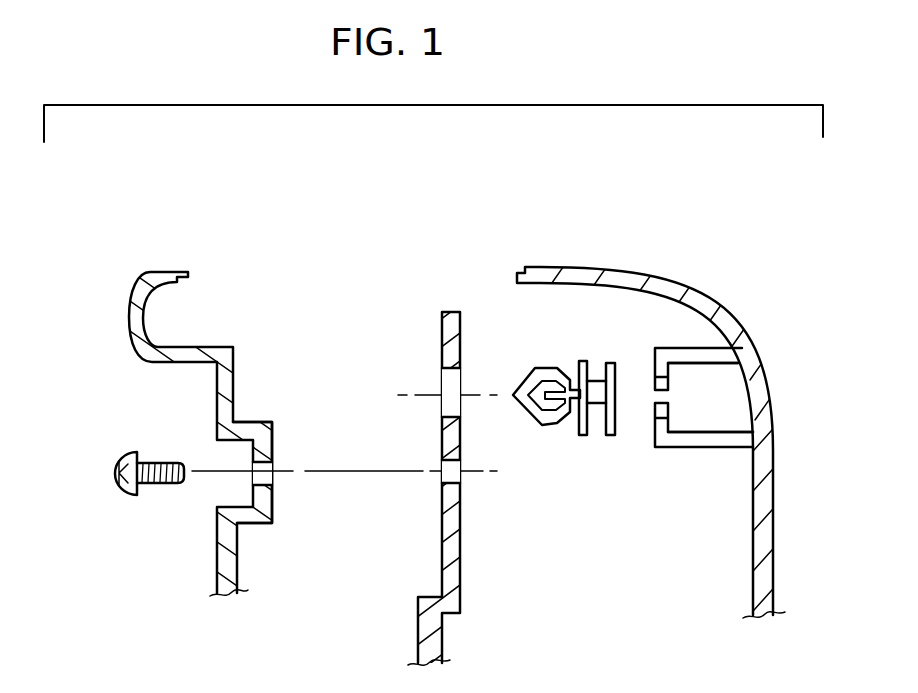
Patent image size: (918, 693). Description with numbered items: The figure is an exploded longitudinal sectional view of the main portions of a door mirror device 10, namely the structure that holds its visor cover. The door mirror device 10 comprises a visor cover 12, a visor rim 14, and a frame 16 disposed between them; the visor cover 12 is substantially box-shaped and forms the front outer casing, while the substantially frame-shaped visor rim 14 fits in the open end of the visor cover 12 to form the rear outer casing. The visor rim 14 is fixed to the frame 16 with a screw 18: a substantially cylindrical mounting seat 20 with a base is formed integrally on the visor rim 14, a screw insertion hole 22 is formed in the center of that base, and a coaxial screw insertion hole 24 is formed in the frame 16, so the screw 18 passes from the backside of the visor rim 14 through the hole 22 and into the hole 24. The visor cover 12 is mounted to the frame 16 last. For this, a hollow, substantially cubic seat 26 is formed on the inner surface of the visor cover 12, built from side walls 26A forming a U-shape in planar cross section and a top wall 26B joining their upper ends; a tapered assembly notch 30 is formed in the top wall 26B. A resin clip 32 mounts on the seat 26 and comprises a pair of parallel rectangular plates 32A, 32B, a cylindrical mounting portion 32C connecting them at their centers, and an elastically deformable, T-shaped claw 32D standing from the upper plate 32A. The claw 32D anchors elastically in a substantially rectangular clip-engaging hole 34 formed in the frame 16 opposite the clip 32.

The door mirror device 10 is at (708, 177).
The visor cover 12 is at (779, 507).
The visor rim 14 is at (217, 440).
The frame 16 is at (468, 488).
The screw 18 is at (120, 487).
The mounting seat 20 is at (273, 430).
The screw insertion hole 22 is at (266, 478).
The screw insertion hole 24 is at (455, 486).
The seat 26 is at (661, 450).
The side walls 26A is at (702, 442).
The top wall 26B is at (653, 430).
The assembly notch 30 is at (710, 397).
The clip 32 is at (586, 346).
The plate 32A is at (584, 360).
The plate 32B is at (613, 362).
The mounting portion 32C is at (597, 406).
The claw 32D is at (527, 369).
The clip-engaging hole 34 is at (455, 374).